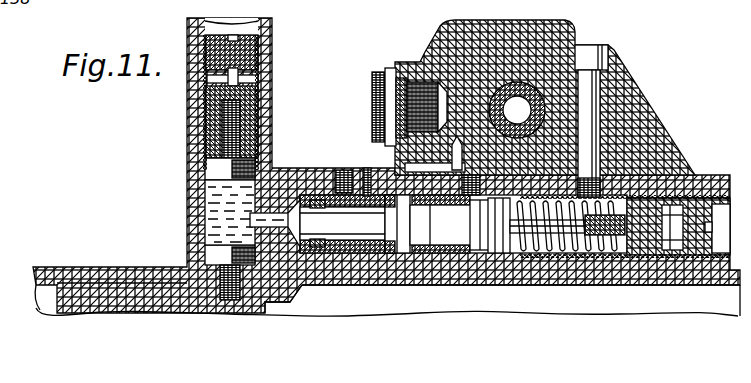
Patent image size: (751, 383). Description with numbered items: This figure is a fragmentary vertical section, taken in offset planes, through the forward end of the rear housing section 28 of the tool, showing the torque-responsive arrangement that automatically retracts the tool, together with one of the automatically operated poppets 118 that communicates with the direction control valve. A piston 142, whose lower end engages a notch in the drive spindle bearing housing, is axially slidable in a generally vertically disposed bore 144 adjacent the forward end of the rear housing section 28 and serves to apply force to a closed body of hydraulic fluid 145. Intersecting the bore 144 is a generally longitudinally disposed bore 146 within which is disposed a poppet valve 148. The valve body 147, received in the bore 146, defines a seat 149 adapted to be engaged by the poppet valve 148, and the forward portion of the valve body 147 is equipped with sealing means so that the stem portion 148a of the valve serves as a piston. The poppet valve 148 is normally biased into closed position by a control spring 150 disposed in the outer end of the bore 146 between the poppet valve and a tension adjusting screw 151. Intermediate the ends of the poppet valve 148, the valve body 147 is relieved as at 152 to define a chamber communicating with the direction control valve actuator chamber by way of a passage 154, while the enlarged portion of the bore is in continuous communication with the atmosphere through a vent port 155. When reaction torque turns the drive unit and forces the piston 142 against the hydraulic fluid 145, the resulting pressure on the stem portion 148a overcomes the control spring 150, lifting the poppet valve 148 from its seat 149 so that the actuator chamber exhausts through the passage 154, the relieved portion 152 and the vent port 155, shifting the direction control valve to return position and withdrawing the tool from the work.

The poppet 118 is at (383, 94).
The vent port 155 is at (371, 176).
The passage 154 is at (453, 154).
The relieved portion 152 is at (462, 186).
The hydraulic fluid 145 is at (215, 209).
The bore 144 is at (205, 230).
The stem portion 148a is at (300, 218).
The poppet valve 148 is at (450, 224).
The valve body 147 is at (300, 250).
The seat 149 is at (376, 250).
The bore 146 is at (487, 250).
The control spring 150 is at (528, 285).
The tension adjusting screw 151 is at (610, 285).
The piston 142 is at (278, 300).
The rear housing section 28 is at (420, 284).